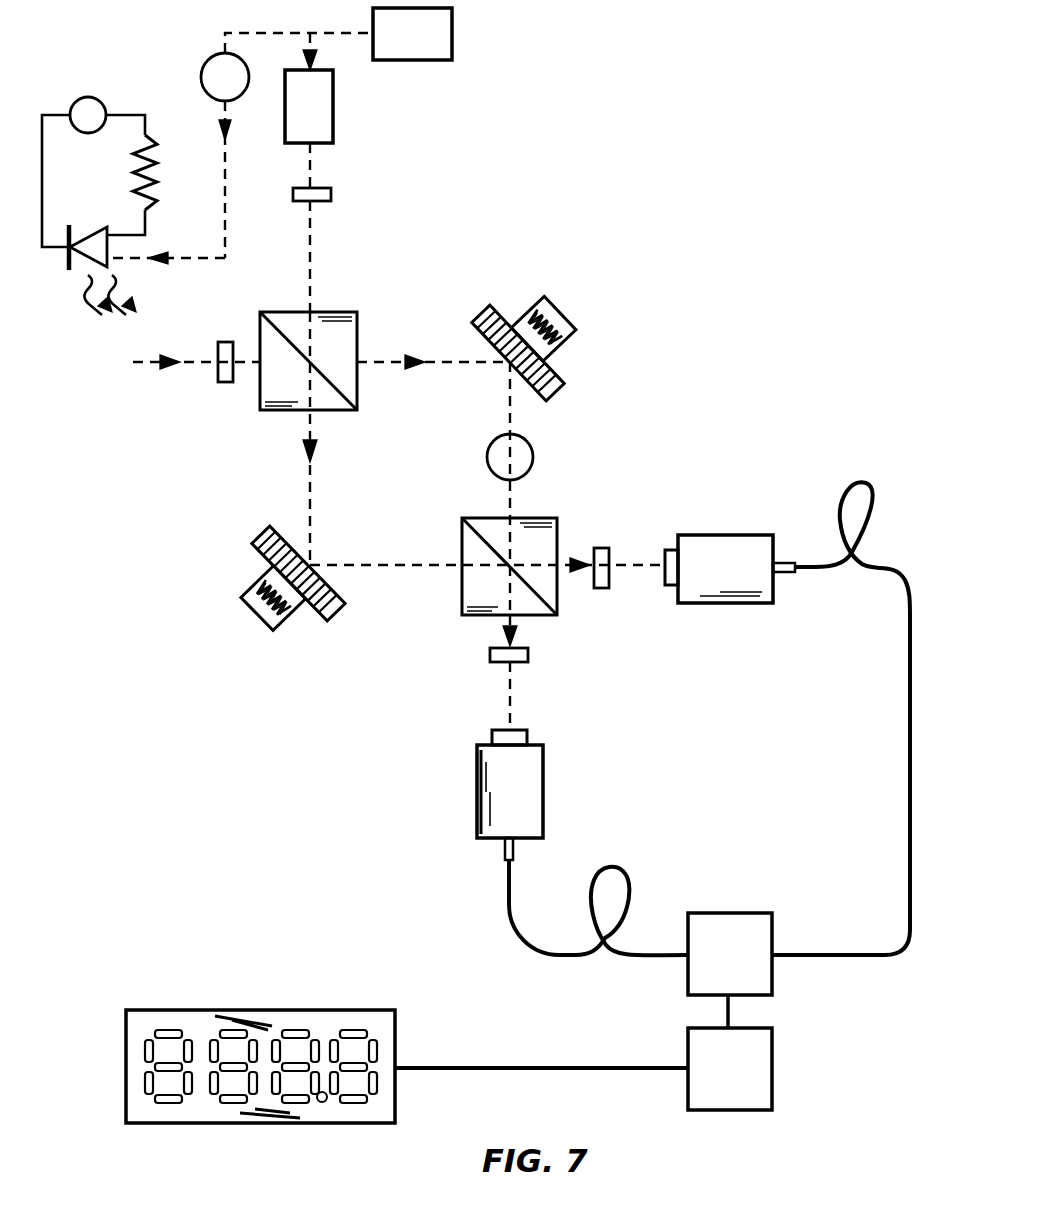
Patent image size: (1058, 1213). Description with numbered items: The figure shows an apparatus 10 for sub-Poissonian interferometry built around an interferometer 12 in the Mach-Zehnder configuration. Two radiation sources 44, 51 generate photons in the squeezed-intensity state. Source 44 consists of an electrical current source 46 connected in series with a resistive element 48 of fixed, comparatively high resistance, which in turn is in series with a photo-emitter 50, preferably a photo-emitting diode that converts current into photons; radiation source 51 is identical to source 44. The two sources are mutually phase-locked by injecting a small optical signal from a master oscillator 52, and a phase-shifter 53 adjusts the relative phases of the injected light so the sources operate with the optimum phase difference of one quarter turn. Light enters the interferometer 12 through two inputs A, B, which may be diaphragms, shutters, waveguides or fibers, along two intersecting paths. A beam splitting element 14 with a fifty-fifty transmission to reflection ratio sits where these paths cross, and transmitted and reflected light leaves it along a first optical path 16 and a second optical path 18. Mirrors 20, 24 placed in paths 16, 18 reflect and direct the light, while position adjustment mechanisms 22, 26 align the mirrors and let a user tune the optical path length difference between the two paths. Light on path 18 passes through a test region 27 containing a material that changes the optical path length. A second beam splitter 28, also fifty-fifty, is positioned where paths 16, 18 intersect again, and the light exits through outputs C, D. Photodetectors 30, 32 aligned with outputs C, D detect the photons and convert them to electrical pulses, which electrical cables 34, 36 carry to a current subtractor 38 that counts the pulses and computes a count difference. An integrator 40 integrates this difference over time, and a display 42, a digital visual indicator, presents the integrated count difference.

The apparatus 10 is at (722, 98).
The interferometer 12 is at (480, 233).
The beam splitting element 14 is at (272, 410).
The first optical path 16 is at (312, 484).
The second optical path 18 is at (392, 366).
The mirror 20 is at (262, 532).
The position adjustment mechanism 22 is at (254, 616).
The mirror 24 is at (560, 395).
The position adjustment mechanism 26 is at (568, 316).
The test region 27 is at (488, 453).
The second beam splitter 28 is at (458, 532).
The photodetector 30 is at (722, 532).
The photodetector 32 is at (544, 790).
The electrical cable 34 is at (906, 745).
The electrical cable 36 is at (506, 887).
The current subtractor 38 is at (730, 970).
The integrator 40 is at (583, 1069).
The display 42 is at (277, 1010).
The radiation source 44 is at (70, 66).
The electrical current source 46 is at (108, 100).
The resistive element 48 is at (153, 187).
The photo-emitter 50 is at (86, 238).
The radiation source 51 is at (334, 105).
The master oscillator 52 is at (454, 40).
The phase-shifter 53 is at (202, 54).
The input A is at (228, 385).
The input B is at (333, 192).
The output C is at (597, 544).
The output D is at (488, 653).